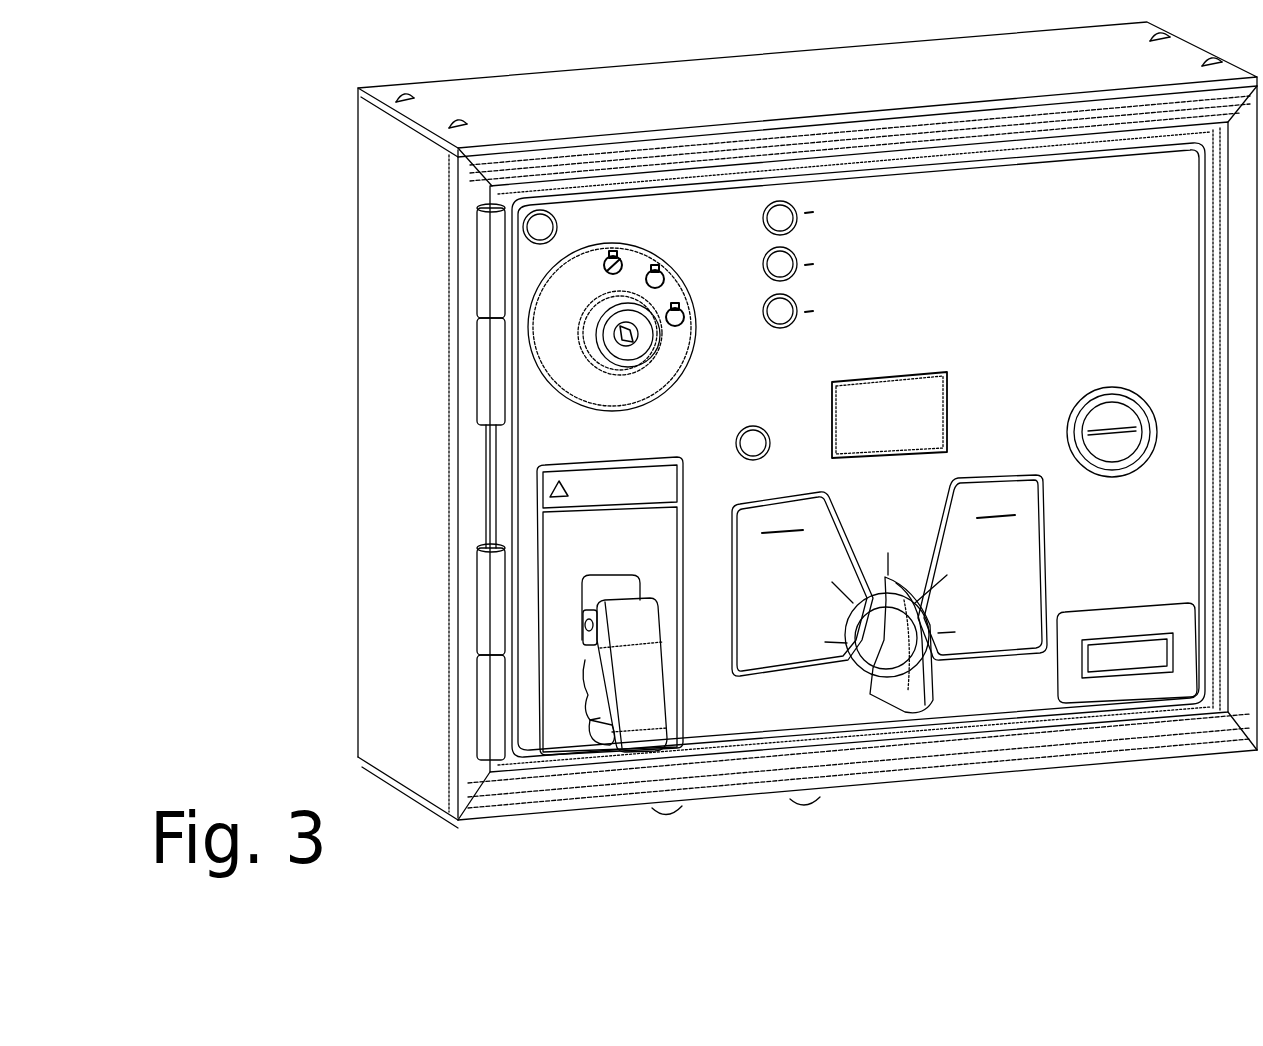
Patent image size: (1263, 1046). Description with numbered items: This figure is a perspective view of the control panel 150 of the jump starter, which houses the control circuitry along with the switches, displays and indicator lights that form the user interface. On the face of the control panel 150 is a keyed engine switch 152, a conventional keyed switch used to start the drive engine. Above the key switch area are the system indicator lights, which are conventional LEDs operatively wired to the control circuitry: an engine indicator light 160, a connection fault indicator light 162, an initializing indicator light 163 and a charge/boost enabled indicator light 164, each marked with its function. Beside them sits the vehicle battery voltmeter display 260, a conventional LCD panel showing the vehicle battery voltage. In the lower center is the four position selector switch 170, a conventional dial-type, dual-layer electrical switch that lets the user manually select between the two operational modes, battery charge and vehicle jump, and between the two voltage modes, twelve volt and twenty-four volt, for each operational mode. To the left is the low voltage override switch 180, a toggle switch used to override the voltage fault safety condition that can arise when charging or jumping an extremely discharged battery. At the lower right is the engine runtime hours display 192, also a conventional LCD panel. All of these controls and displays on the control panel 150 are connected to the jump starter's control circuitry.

The control panel 150 is at (300, 227).
The engine switch 152 is at (575, 317).
The engine indicator light 160 is at (556, 218).
The connection fault indicator light 162 is at (762, 218).
The initializing indicator light 163 is at (762, 265).
The charge/boost enabled indicator light 164 is at (762, 311).
The selector switch 170 is at (918, 688).
The low voltage override switch 180 is at (636, 694).
The engine runtime hours display 192 is at (1145, 655).
The vehicle battery voltmeter display 260 is at (920, 413).